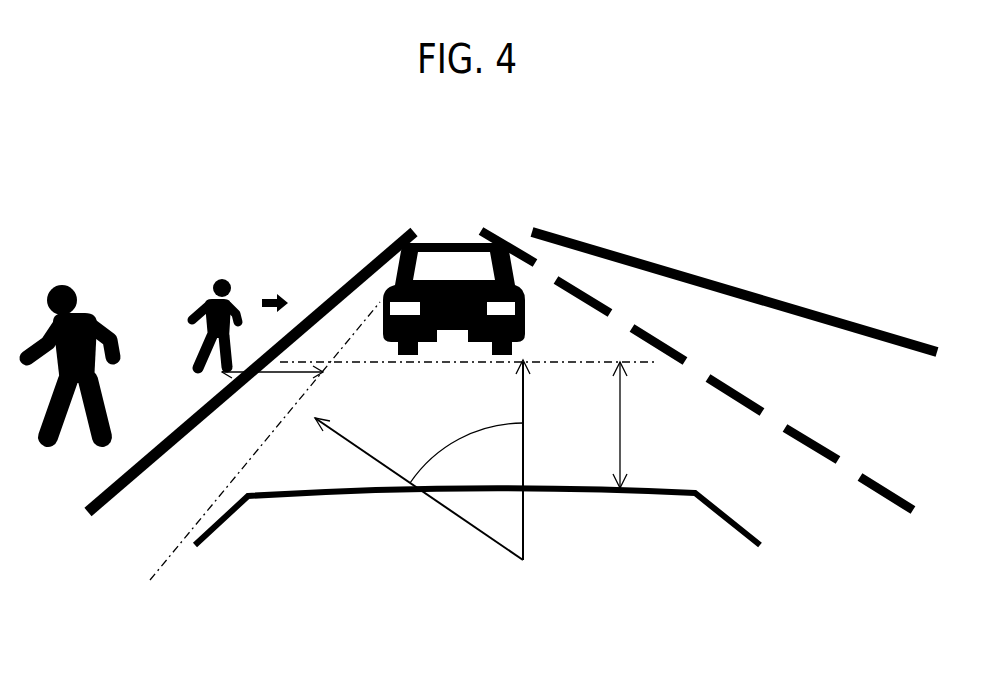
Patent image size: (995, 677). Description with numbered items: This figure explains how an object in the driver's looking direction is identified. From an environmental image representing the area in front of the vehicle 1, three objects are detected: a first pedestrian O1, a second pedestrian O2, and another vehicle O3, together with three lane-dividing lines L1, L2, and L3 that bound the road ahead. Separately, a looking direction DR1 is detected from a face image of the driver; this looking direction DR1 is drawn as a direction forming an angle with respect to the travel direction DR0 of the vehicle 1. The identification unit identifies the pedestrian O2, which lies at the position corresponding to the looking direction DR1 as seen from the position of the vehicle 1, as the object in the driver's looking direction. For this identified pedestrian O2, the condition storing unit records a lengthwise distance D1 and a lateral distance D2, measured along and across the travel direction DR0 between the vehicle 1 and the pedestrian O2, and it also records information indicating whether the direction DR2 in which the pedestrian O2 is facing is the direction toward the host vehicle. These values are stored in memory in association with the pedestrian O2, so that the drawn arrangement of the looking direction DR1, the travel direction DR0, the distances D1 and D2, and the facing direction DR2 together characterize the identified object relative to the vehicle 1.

The object (pedestrian) O1 is at (58, 285).
The object (pedestrian) O2 is at (222, 279).
The object (another vehicle) O3 is at (440, 242).
The direction in which the object is facing DR2 is at (270, 292).
The lateral distance D2 is at (278, 374).
The lane-dividing line L1 is at (105, 508).
The lane-dividing line L2 is at (823, 461).
The lane-dividing line L3 is at (852, 335).
The travel direction DR0 is at (523, 393).
The looking direction DR1 is at (353, 440).
The lengthwise distance D1 is at (620, 395).
The vehicle 1 is at (702, 492).